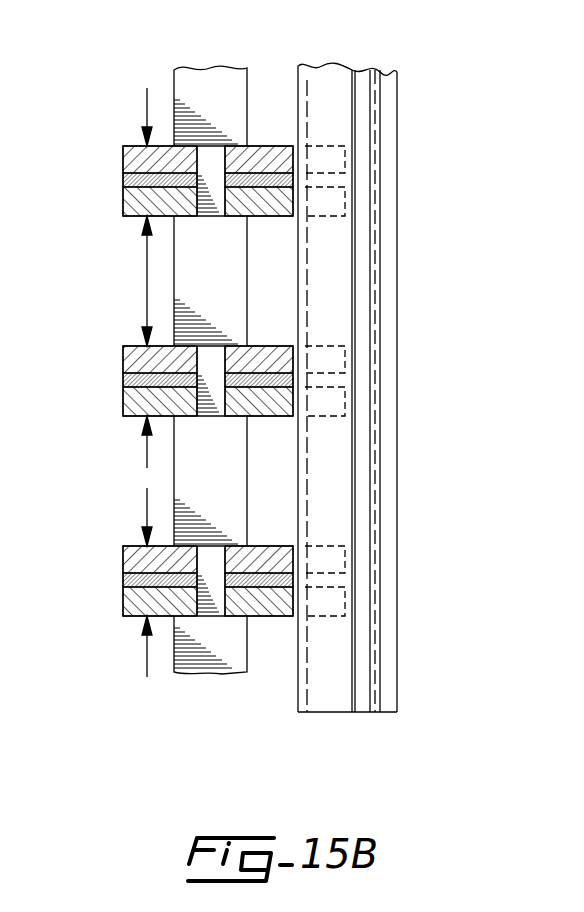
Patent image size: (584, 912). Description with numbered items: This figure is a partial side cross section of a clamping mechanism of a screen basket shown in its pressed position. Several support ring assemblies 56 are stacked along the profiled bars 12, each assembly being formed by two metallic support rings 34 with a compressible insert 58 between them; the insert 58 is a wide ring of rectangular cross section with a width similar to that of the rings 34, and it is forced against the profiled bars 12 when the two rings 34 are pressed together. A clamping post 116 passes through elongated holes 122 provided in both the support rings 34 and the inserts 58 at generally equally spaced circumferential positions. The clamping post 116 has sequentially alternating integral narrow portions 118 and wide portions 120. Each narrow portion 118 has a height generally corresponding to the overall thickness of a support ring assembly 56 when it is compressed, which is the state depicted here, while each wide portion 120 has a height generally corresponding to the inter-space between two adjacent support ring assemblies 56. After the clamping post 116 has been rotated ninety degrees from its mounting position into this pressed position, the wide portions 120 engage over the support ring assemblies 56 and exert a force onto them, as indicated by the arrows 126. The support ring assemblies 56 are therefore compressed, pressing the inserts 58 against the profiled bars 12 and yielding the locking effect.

The profiled bars 12 is at (323, 85).
The support rings 34 is at (133, 160).
The support ring assembly 56 is at (126, 132).
The compressible insert 58 is at (125, 582).
The clamping post 116 is at (193, 677).
The narrow portions 118 is at (212, 193).
The wide portions 120 is at (213, 107).
The elongated holes 122 is at (210, 162).
The arrows 126 is at (147, 88).